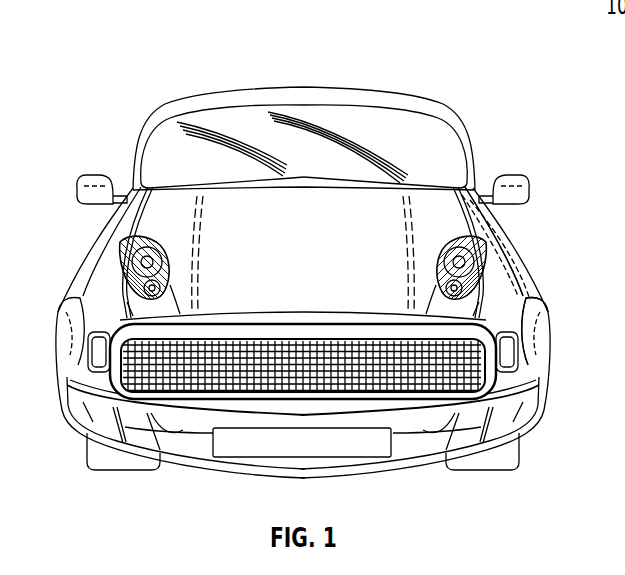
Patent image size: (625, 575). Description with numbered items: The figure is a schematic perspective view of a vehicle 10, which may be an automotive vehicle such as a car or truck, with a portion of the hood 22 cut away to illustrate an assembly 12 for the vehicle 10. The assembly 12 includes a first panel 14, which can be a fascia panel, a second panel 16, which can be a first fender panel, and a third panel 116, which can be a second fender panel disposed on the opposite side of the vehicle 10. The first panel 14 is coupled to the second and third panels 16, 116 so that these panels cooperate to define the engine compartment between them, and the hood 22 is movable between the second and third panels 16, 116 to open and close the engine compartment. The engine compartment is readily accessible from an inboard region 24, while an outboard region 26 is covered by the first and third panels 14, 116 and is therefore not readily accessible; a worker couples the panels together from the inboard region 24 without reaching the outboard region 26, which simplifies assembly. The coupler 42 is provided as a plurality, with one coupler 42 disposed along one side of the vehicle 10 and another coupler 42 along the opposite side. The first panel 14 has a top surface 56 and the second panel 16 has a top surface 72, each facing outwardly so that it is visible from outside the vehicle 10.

The vehicle 10 is at (100, 51).
The assembly 12 is at (429, 254).
The first panel 14 is at (537, 351).
The second panel 16 is at (468, 214).
The hood 22 is at (150, 218).
The inboard region 24 is at (486, 273).
The outboard region 26 is at (507, 224).
The coupler 42 is at (125, 268).
The top surface 56 is at (491, 262).
The top surface 72 is at (518, 178).
The third panel 116 is at (128, 235).